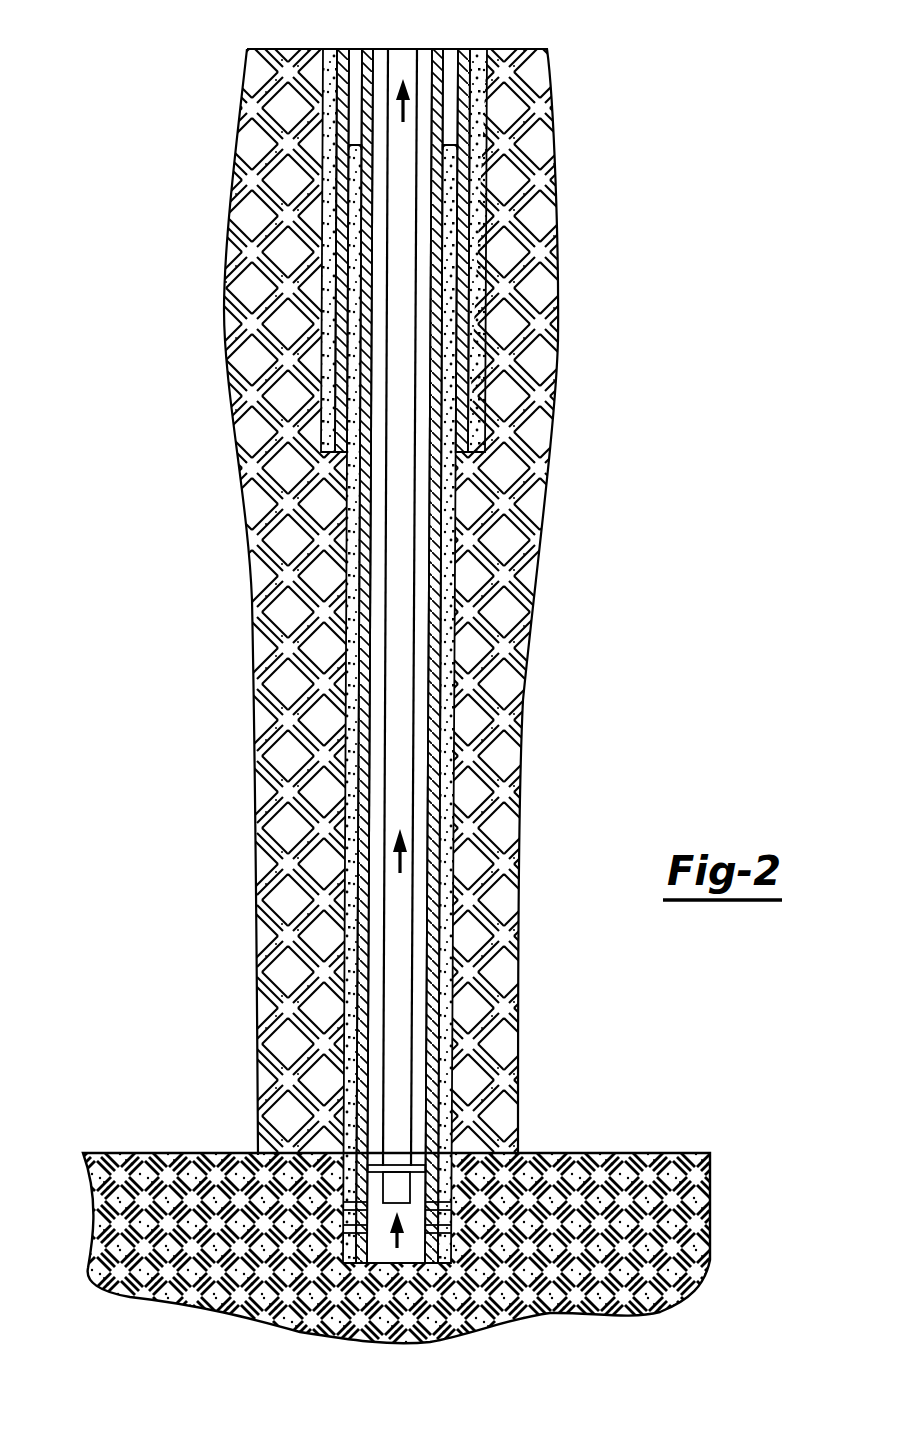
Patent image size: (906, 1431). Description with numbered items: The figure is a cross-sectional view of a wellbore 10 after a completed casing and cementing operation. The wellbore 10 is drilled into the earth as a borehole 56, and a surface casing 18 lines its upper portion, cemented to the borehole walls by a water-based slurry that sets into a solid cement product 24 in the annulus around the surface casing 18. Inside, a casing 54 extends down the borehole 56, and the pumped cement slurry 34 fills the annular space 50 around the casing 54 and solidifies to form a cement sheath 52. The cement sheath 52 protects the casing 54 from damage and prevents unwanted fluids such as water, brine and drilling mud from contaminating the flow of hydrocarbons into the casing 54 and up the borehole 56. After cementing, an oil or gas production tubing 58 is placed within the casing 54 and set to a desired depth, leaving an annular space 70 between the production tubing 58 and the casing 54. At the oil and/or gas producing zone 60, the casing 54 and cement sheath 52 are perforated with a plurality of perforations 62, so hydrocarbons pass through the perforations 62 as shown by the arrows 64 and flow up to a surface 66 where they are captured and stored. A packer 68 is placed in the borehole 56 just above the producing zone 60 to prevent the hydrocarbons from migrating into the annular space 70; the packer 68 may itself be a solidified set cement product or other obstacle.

The wellbore 10 is at (203, 783).
The surface casing 18 is at (460, 198).
The solid cement product 24 is at (482, 293).
The cement slurry 34 is at (353, 208).
The annular space 50 is at (453, 103).
The cement sheath 52 is at (447, 763).
The casing 54 is at (435, 645).
The borehole 56 is at (348, 512).
The production tubing 58 is at (415, 1010).
The oil and/or gas producing zone 60 is at (212, 1155).
The perforations 62 is at (452, 1200).
The arrows 64 is at (398, 1248).
The surface 66 is at (404, 48).
The packer 68 is at (424, 1166).
The annular space 70 is at (373, 1102).